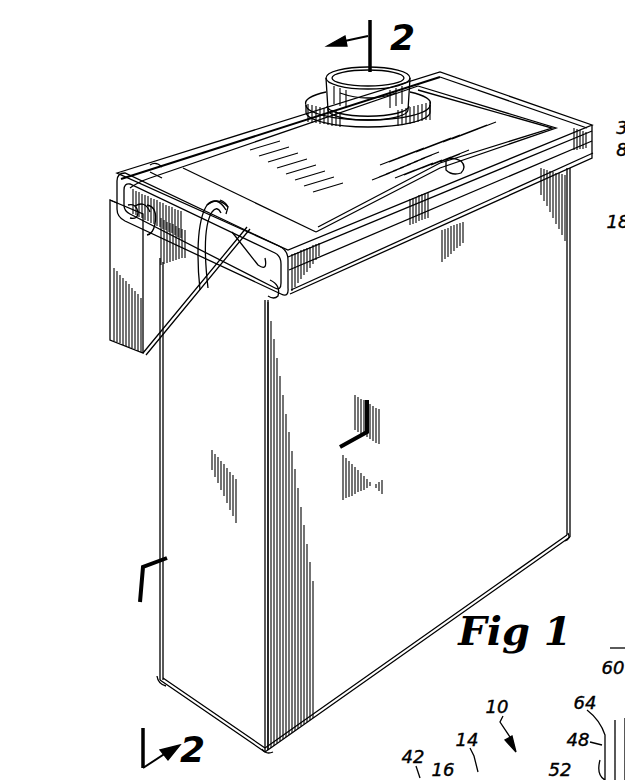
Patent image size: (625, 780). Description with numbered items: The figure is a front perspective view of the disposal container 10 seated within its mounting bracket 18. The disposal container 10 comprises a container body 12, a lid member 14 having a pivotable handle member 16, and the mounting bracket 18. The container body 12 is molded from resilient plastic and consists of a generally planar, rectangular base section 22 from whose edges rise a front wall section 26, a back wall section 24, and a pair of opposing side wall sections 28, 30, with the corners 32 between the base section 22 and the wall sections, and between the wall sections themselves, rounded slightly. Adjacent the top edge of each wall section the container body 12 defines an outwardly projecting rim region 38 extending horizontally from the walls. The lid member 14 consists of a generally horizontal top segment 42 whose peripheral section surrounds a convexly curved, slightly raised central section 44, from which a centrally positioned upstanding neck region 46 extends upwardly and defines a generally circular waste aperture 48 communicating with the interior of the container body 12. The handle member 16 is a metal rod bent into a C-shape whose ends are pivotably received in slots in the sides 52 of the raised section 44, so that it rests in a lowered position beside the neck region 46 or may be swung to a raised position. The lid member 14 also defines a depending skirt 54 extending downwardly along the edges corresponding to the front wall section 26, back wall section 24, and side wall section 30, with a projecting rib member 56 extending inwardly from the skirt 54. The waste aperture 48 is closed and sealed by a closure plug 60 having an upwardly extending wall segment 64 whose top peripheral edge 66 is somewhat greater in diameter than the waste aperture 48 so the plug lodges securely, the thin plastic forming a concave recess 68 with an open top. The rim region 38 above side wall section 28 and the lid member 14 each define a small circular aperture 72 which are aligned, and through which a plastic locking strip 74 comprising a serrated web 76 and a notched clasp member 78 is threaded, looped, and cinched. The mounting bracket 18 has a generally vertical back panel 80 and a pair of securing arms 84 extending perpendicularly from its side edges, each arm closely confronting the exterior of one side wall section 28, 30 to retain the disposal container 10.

The disposal container 10 is at (151, 80).
The container body 12 is at (341, 467).
The lid member 14 is at (329, 176).
The handle member 16 is at (354, 161).
The mounting bracket 18 is at (152, 266).
The base section 22 is at (182, 700).
The back wall section 24 is at (543, 400).
The front wall section 26 is at (160, 432).
The side wall section 28 is at (175, 452).
The side wall section 30 is at (573, 420).
The corners 32 is at (160, 678).
The rim region 38 is at (152, 220).
The top segment 42 is at (150, 170).
The raised central section 44 is at (250, 135).
The neck region 46 is at (352, 125).
The waste aperture 48 is at (395, 95).
The sides 52 is at (440, 170).
The depending skirt 54 is at (113, 197).
The projecting rib member 56 is at (133, 228).
The closure plug 60 is at (341, 79).
The wall segment 64 is at (364, 79).
The top peripheral edge 66 is at (402, 68).
The concave recess 68 is at (345, 80).
The circular aperture 72 is at (220, 200).
The locking strip 74 is at (193, 230).
The serrated web 76 is at (198, 286).
The notched clasp member 78 is at (268, 252).
The back panel 80 is at (115, 200).
The securing arms 84 is at (128, 307).